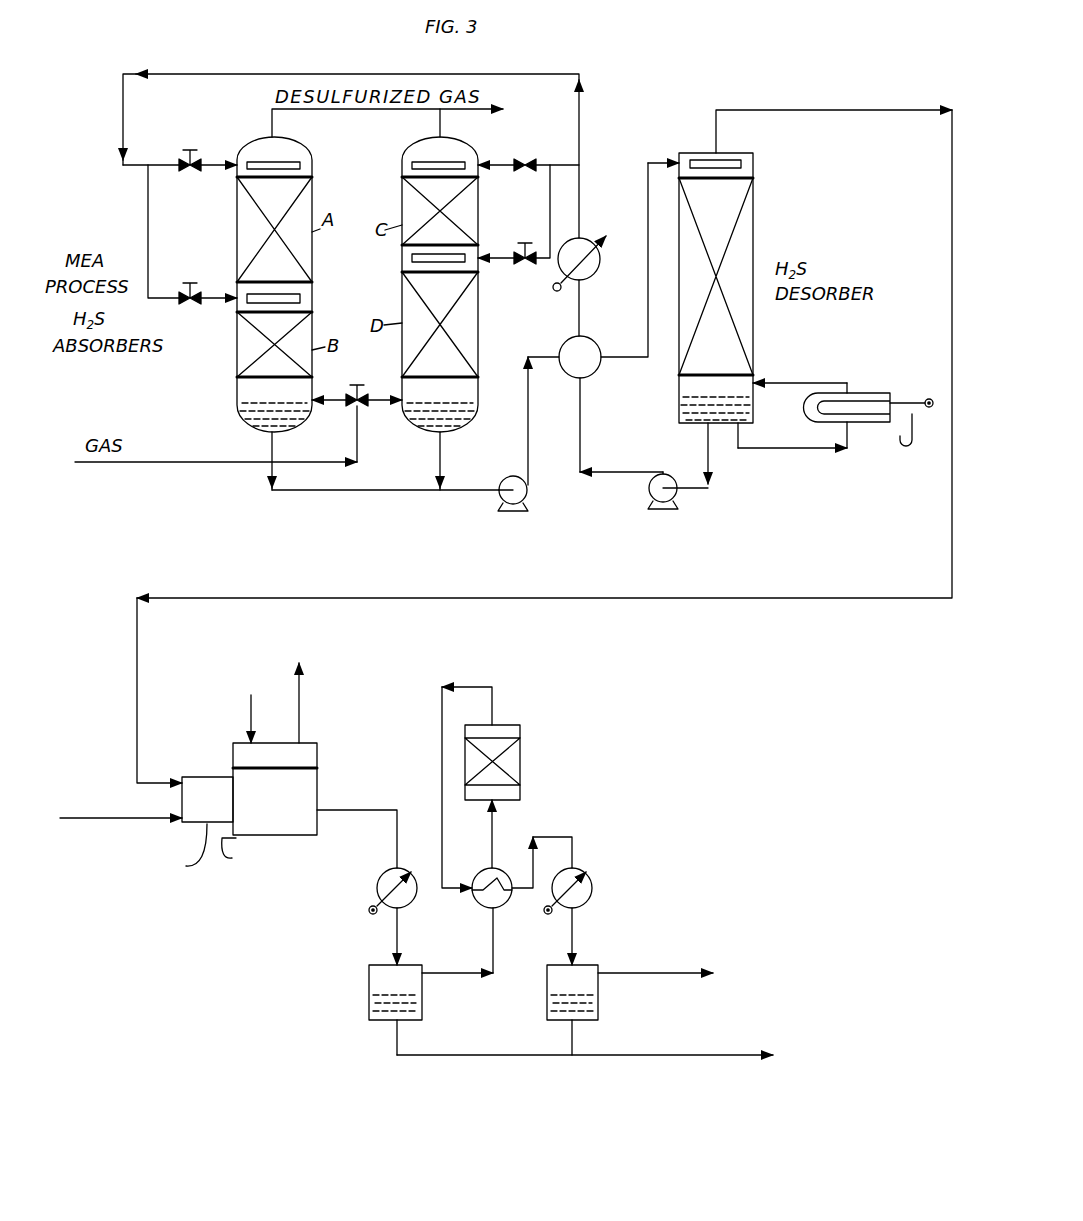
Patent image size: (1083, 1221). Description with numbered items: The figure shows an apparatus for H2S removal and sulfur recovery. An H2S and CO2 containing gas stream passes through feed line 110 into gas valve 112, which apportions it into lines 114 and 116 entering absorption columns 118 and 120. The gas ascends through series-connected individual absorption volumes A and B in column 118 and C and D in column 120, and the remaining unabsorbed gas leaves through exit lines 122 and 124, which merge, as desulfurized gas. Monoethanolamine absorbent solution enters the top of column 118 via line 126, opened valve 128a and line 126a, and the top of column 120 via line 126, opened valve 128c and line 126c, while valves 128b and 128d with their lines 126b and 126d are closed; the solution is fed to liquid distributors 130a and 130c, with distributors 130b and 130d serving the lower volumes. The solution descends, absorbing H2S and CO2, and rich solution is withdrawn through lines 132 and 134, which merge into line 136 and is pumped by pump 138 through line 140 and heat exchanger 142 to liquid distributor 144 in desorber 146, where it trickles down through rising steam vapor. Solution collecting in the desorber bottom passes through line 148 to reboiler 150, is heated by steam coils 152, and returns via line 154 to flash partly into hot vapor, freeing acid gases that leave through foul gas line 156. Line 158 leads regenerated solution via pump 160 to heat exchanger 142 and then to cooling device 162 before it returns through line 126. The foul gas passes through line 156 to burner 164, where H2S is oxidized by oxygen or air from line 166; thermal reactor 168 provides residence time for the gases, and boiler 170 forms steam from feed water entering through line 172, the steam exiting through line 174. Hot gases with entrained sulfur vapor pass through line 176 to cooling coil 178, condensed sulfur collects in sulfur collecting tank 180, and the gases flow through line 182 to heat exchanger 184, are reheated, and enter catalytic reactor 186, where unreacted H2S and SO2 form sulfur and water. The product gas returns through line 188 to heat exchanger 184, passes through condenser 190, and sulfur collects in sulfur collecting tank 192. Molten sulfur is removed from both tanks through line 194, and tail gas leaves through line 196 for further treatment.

The feed line 110 is at (197, 462).
The gas valve 112 is at (360, 410).
The line 114 is at (335, 400).
The line 116 is at (380, 400).
The absorption column 118 is at (237, 396).
The absorption column 120 is at (478, 392).
The exit line 122 is at (307, 110).
The exit line 124 is at (440, 118).
The line 126 is at (579, 197).
The line 126a is at (209, 170).
The line 126b is at (209, 305).
The line 126c is at (500, 167).
The line 126d is at (500, 262).
The valve 128a is at (185, 158).
The valve 128b is at (200, 268).
The valve 128c is at (526, 158).
The valve 128d is at (522, 250).
The liquid distributor 130a is at (300, 165).
The liquid distributor 130b is at (300, 298).
The liquid distributor 130c is at (412, 166).
The liquid distributor 130d is at (412, 258).
The line 132 is at (272, 447).
The line 134 is at (440, 455).
The line 136 is at (466, 491).
The pump 138 is at (526, 497).
The line 140 is at (533, 357).
The heat exchanger 142 is at (570, 378).
The liquid distributor 144 is at (697, 160).
The desorber 146 is at (753, 208).
The line 148 is at (786, 449).
The reboiler 150 is at (866, 422).
The steam coils 152 is at (925, 399).
The line 154 is at (805, 383).
The foul gas line 156 is at (905, 110).
The line 158 is at (635, 472).
The pump 160 is at (650, 492).
The cooling device 162 is at (598, 270).
The burner 164 is at (193, 777).
The line 166 is at (113, 818).
The thermal reactor 168 is at (317, 798).
The boiler 170 is at (305, 745).
The line 172 is at (250, 714).
The line 174 is at (300, 700).
The line 176 is at (362, 810).
The cooling coil 178 is at (414, 897).
The sulfur collecting tank 180 is at (422, 997).
The line 182 is at (493, 948).
The heat exchanger 184 is at (480, 904).
The catalytic reactor 186 is at (520, 793).
The line 188 is at (478, 687).
The condenser 190 is at (592, 880).
The sulfur collecting tank 192 is at (598, 998).
The line 194 is at (505, 1055).
The line 196 is at (683, 976).